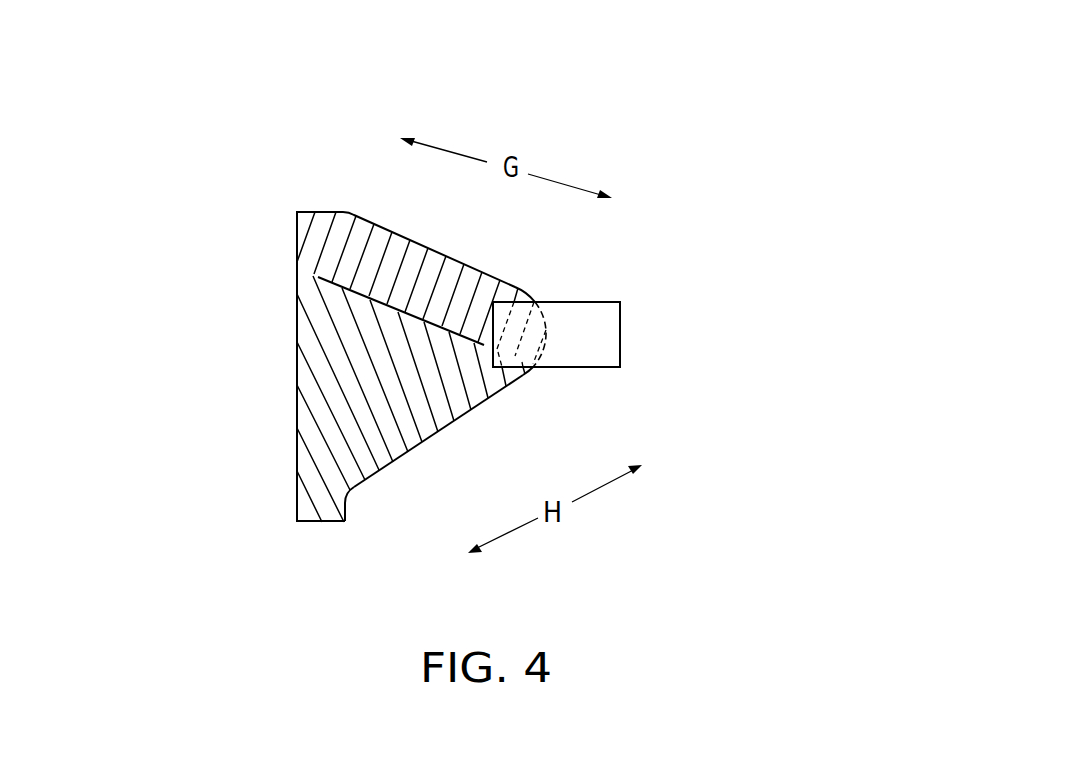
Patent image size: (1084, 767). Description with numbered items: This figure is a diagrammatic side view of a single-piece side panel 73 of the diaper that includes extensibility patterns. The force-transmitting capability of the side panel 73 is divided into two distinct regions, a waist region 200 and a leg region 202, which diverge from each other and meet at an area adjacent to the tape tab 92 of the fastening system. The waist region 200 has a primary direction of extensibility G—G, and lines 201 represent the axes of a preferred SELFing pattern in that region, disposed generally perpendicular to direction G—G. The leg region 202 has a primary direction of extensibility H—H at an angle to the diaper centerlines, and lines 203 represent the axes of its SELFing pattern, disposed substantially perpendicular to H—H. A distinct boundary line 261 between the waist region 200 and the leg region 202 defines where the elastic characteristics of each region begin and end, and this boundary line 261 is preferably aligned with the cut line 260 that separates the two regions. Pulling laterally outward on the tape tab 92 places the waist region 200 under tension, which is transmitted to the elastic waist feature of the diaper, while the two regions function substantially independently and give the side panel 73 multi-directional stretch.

The side panel 73 is at (648, 130).
The waist region 200 is at (358, 238).
The lines 201 is at (458, 278).
The leg region 202 is at (463, 402).
The lines 203 is at (427, 430).
The tape tab 92 is at (612, 343).
The cut line 260 is at (412, 315).
The boundary line 261 is at (350, 287).